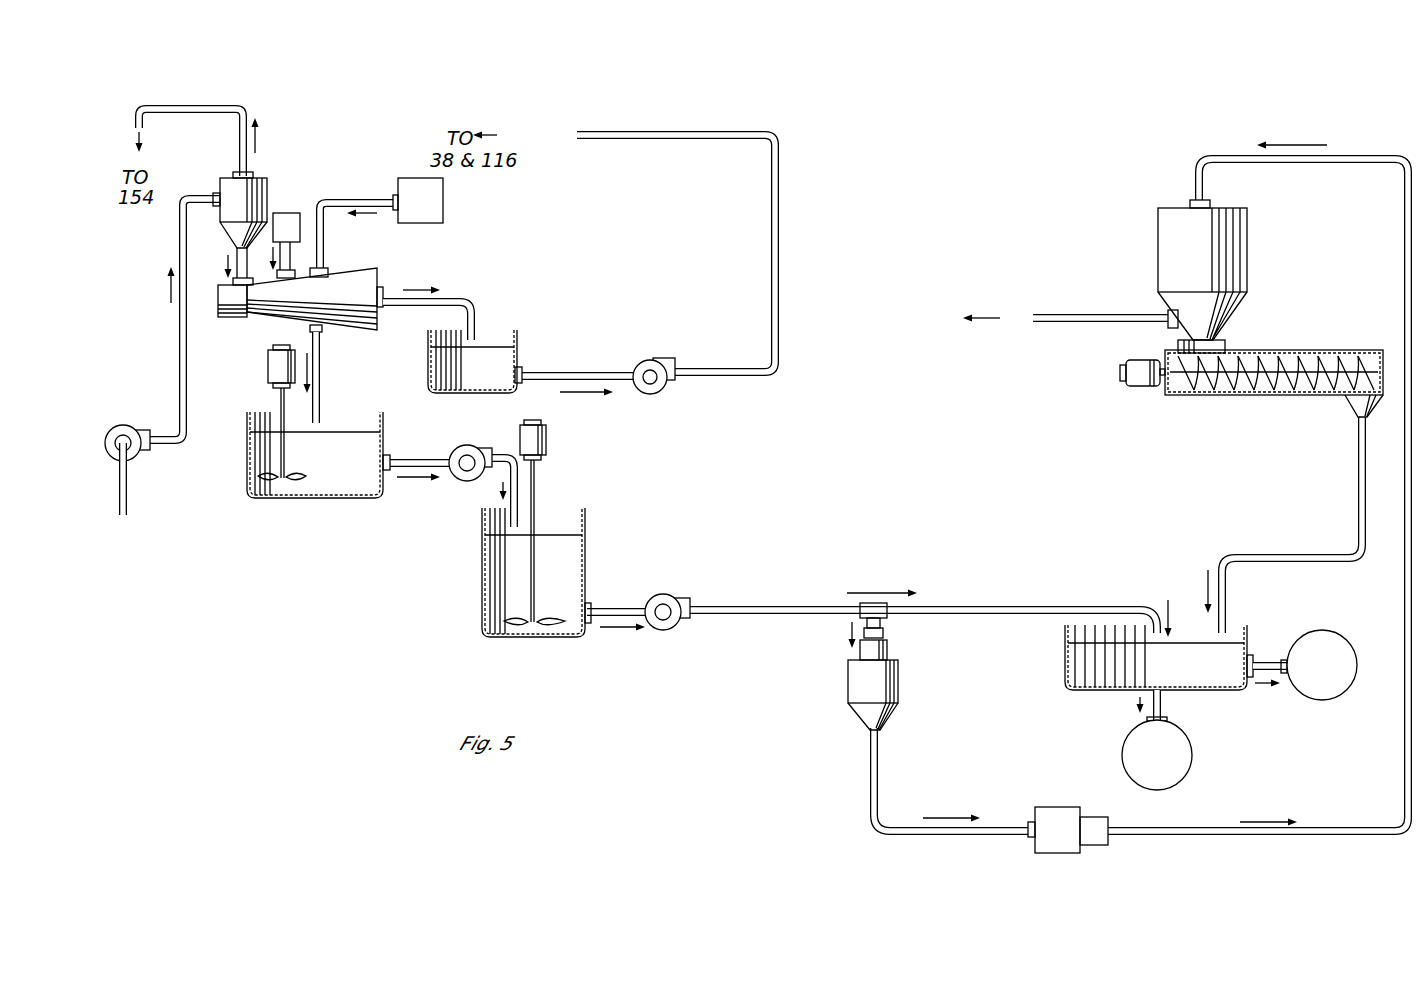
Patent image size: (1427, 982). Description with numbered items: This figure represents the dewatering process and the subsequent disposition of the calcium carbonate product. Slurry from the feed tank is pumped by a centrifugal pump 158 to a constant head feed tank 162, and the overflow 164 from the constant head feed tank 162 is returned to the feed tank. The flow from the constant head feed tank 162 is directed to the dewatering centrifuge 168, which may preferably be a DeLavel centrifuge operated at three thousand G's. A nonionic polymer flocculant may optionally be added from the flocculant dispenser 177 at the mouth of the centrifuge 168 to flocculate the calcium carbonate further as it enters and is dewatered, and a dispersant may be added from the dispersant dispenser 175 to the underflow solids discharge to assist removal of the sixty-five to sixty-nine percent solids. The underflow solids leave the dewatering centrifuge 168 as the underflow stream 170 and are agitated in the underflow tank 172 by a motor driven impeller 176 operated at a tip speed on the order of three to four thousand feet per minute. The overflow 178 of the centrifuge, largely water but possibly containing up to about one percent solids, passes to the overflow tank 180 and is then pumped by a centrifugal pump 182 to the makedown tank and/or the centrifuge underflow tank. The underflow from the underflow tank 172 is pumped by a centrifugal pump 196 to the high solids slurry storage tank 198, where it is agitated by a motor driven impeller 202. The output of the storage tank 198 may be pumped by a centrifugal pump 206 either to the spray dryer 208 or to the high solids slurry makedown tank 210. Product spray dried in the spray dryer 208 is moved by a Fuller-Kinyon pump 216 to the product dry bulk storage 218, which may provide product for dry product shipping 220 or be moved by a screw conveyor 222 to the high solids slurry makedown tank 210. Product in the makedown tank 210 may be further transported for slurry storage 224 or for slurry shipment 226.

The centrifugal pump 158 is at (130, 428).
The constant head feed tank 162 is at (263, 182).
The overflow 164 is at (165, 107).
The dewatering centrifuge 168 is at (262, 318).
The underflow stream 170 is at (322, 380).
The underflow tank 172 is at (247, 465).
The dispersant dispenser 175 is at (290, 212).
The motor driven impeller 176 is at (300, 483).
The flocculant dispenser 177 is at (436, 205).
The overflow 178 is at (457, 297).
The overflow tank 180 is at (520, 345).
The centrifugal pump 182 is at (666, 386).
The centrifugal pump 196 is at (460, 480).
The high solids slurry storage tank 198 is at (483, 560).
The motor driven impeller 202 is at (490, 633).
The centrifugal pump 206 is at (681, 600).
The spray dryer 208 is at (858, 690).
The high solids slurry makedown tank 210 is at (1066, 665).
The Fuller-Kinyon pump 216 is at (1036, 845).
The product dry bulk storage 218 is at (1170, 230).
The dry product shipping 220 is at (1075, 323).
The screw conveyor 222 is at (1268, 350).
The slurry storage 224 is at (1333, 690).
The slurry shipment 226 is at (1132, 757).